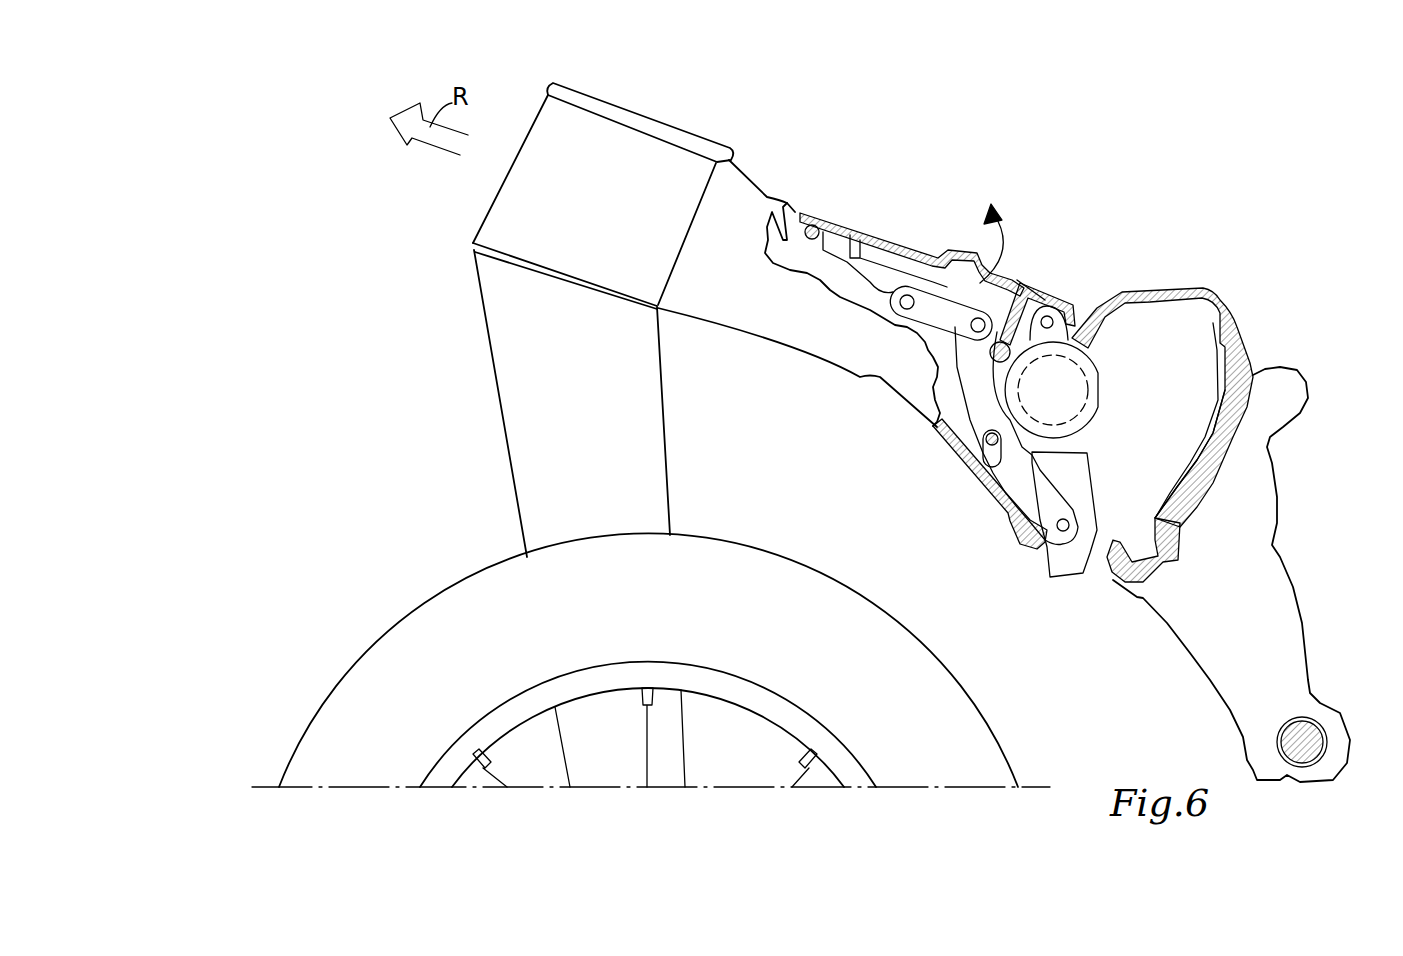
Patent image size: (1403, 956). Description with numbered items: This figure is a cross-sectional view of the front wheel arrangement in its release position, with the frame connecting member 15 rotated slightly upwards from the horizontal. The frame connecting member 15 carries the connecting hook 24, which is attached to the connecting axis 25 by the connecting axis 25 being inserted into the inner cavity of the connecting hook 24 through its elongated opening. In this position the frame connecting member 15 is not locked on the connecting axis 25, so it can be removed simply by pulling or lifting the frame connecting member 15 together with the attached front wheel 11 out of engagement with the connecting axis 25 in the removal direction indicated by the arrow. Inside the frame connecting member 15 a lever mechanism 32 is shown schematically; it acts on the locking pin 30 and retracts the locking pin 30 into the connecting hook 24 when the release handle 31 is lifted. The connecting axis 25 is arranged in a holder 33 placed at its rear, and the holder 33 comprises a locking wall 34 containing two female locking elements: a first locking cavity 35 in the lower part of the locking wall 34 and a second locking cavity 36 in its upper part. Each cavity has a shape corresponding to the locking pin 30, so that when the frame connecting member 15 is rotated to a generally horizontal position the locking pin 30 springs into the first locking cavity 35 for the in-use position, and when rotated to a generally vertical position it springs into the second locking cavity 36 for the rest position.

The front wheel 11 is at (893, 665).
The frame connecting member 15 is at (798, 333).
The connecting hook 24 is at (1050, 470).
The connecting axis 25 is at (1062, 377).
The locking pin 30 is at (1065, 560).
The release handle 31 is at (893, 243).
The lever mechanism 32 is at (1008, 478).
The holder 33 is at (1220, 377).
The locking wall 34 is at (1222, 415).
The first locking cavity 35 is at (1140, 540).
The second locking cavity 36 is at (1213, 323).